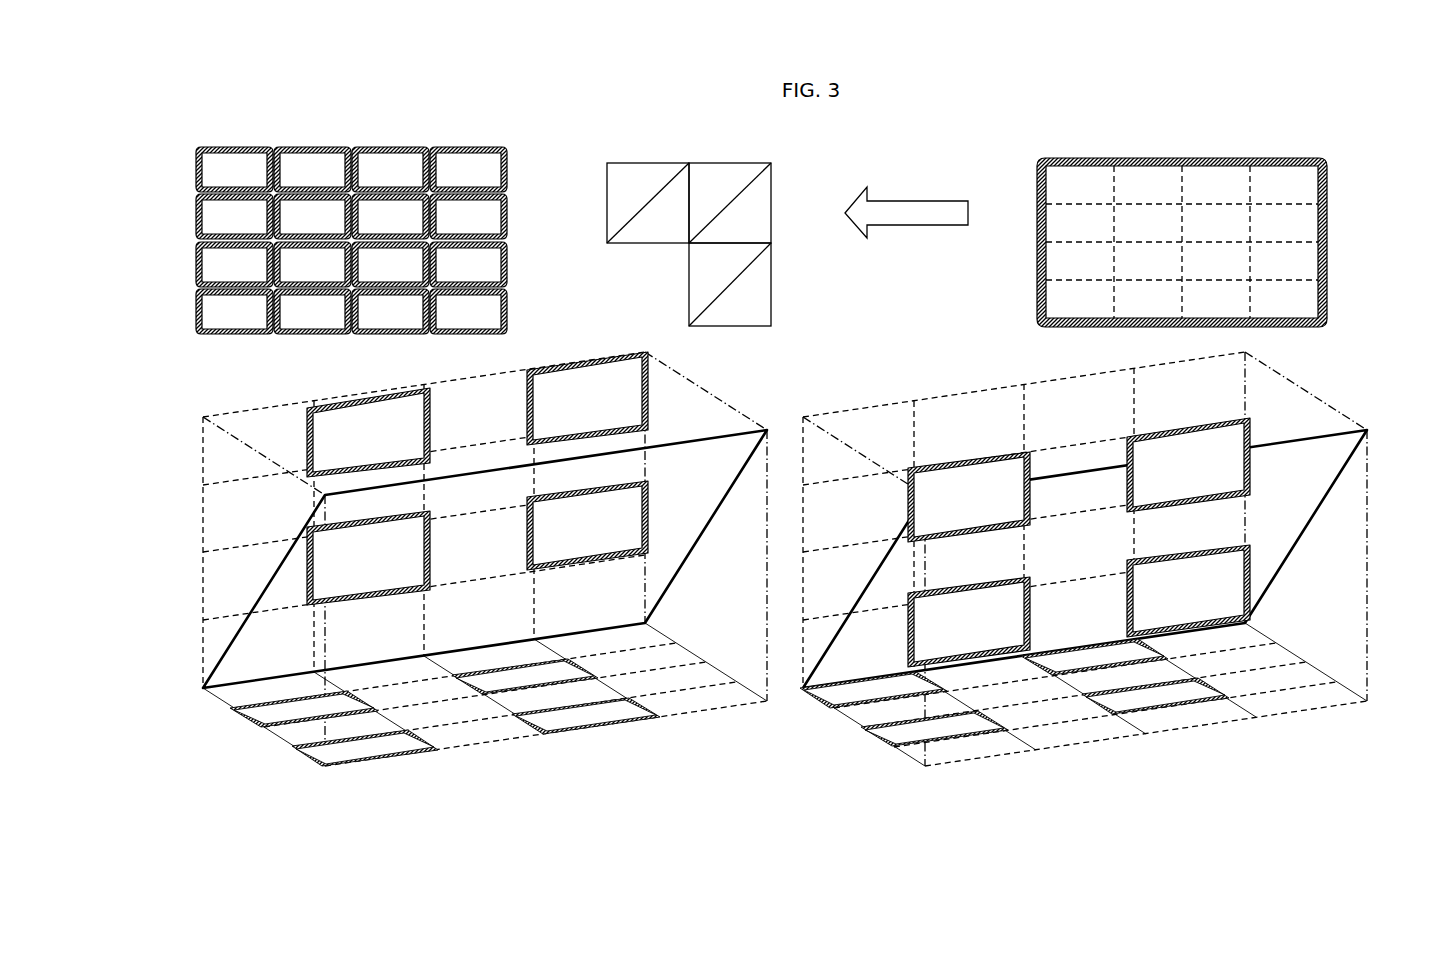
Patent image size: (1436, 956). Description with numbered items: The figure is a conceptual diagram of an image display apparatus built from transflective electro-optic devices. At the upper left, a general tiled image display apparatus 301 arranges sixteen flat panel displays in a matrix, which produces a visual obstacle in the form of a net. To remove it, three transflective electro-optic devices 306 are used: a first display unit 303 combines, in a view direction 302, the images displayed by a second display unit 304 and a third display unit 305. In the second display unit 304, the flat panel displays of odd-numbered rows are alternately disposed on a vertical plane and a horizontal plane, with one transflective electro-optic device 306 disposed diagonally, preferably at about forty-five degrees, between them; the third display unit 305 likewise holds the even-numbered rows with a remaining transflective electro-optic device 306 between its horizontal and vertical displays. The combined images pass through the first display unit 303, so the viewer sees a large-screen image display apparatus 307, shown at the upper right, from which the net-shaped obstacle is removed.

The tiled image display apparatus 301 is at (512, 264).
The view direction 302 is at (913, 228).
The first display unit 303 is at (776, 204).
The second display unit 304 is at (604, 203).
The third display unit 305 is at (778, 291).
The transflective electro-optic device 306 is at (725, 201).
The large-screen image display apparatus 307 is at (1033, 268).